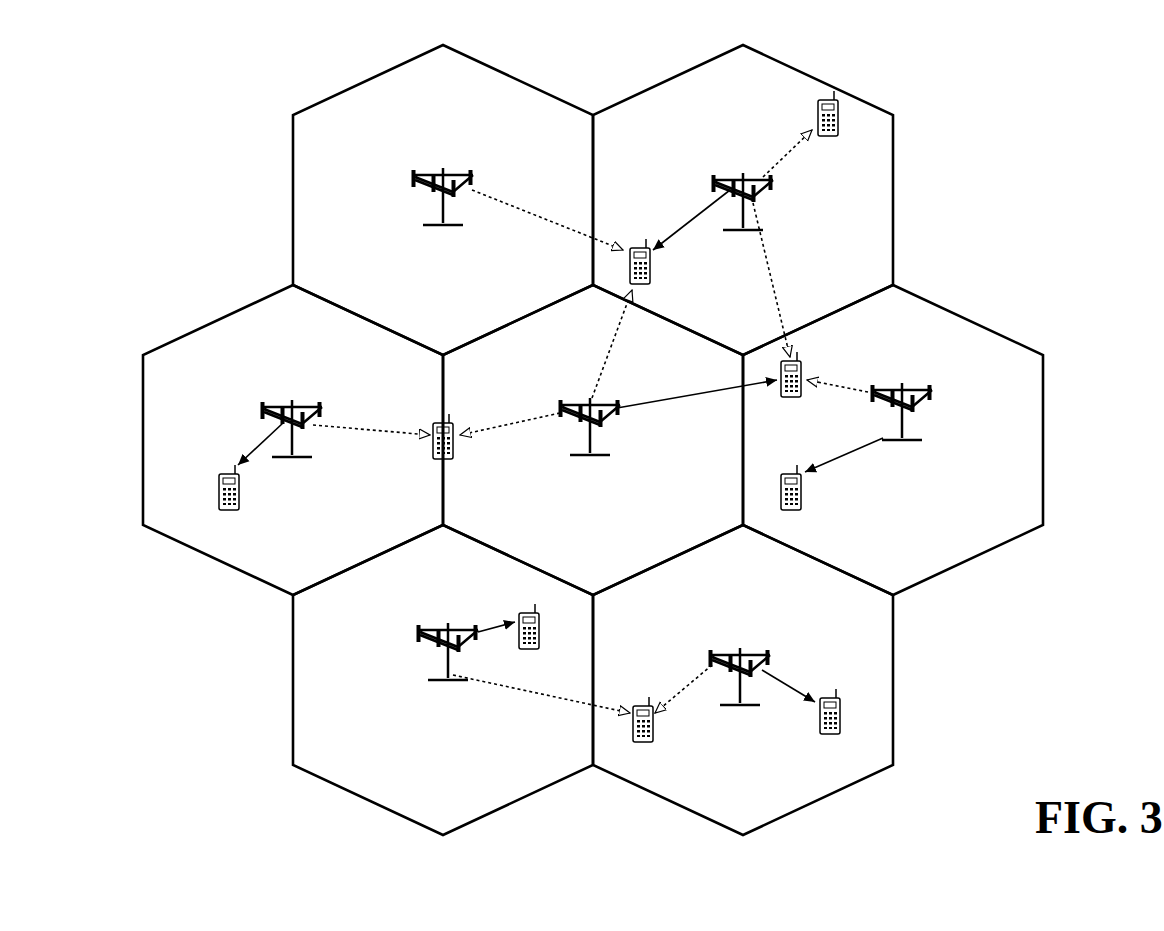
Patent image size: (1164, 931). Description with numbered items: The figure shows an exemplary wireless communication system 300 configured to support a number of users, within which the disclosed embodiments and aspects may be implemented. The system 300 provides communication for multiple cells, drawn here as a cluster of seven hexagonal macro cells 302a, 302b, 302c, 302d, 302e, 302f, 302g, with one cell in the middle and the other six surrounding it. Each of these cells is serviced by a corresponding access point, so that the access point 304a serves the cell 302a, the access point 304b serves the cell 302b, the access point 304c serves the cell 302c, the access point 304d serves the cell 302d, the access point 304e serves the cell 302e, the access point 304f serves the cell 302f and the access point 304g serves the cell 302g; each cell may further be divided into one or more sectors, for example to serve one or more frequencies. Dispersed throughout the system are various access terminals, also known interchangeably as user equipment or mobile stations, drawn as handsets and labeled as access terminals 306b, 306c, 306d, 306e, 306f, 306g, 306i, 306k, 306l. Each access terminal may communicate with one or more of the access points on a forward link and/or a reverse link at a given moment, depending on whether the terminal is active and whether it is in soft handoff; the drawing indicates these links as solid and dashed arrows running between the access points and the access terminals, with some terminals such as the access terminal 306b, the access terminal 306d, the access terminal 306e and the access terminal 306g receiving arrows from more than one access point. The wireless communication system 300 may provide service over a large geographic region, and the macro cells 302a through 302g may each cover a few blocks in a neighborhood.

The wireless communication system 300 is at (1014, 226).
The macro cell 302a is at (370, 78).
The macro cell 302b is at (808, 78).
The macro cell 302c is at (221, 318).
The macro cell 302d is at (573, 323).
The macro cell 302e is at (962, 318).
The macro cell 302f is at (293, 687).
The macro cell 302g is at (896, 688).
The access point 304a is at (411, 175).
The access point 304b is at (714, 180).
The access point 304c is at (268, 407).
The access point 304d is at (559, 405).
The access point 304e is at (934, 392).
The access point 304f is at (418, 630).
The access point 304g is at (710, 655).
The access terminal 306b is at (640, 248).
The access terminal 306c is at (218, 491).
The access terminal 306d is at (433, 427).
The access terminal 306e is at (802, 371).
The access terminal 306f is at (523, 613).
The access terminal 306g is at (642, 706).
The access terminal 306i is at (816, 112).
The access terminal 306k is at (792, 474).
The access terminal 306l is at (825, 698).